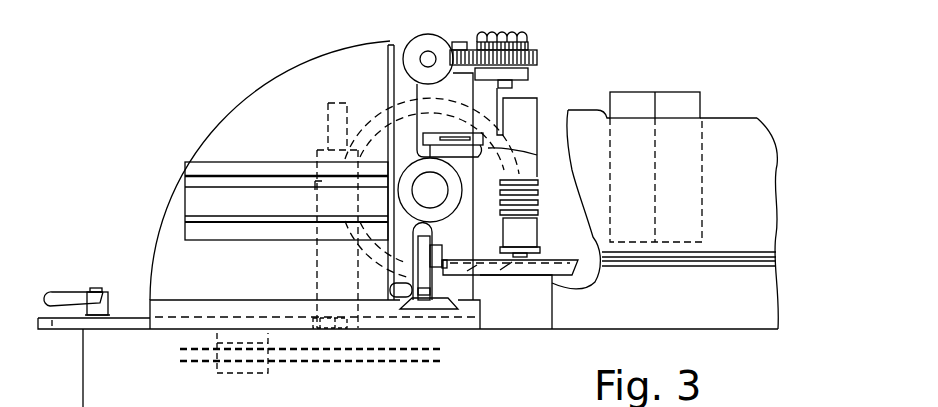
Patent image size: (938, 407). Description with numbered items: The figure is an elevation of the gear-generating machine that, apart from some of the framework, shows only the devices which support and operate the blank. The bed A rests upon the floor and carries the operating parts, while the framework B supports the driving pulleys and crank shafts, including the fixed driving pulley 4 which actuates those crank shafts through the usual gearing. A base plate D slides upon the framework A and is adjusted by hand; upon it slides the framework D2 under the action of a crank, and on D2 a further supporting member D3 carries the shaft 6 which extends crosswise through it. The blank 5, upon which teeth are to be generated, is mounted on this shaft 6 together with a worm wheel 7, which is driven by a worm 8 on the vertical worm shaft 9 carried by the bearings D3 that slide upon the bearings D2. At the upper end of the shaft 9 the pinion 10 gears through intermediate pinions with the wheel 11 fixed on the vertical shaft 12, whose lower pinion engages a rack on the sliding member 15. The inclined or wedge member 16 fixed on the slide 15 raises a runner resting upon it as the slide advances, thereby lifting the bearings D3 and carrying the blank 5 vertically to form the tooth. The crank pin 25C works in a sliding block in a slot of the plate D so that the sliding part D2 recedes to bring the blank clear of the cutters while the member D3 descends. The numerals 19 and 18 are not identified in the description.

The sliding framework D2 is at (246, 128).
The supporting member D3 is at (397, 80).
The base plate D is at (63, 328).
The bed A is at (717, 315).
The framework B is at (587, 125).
The fixed driving pulley 4 is at (636, 100).
The shaft 6 is at (427, 185).
The worm wheel 7 is at (538, 172).
The worm 8 is at (539, 202).
The vertical worm shaft 9 is at (497, 250).
The pinion 10 is at (517, 50).
The wheel 11 is at (473, 43).
The vertical shaft 12 is at (455, 43).
The inclined member 16 is at (422, 250).
The crank pin 25C is at (330, 320).
The member 19 is at (380, 401).
The member 18 is at (421, 398).
The sliding member 15 is at (468, 400).
The blank 5 is at (313, 398).